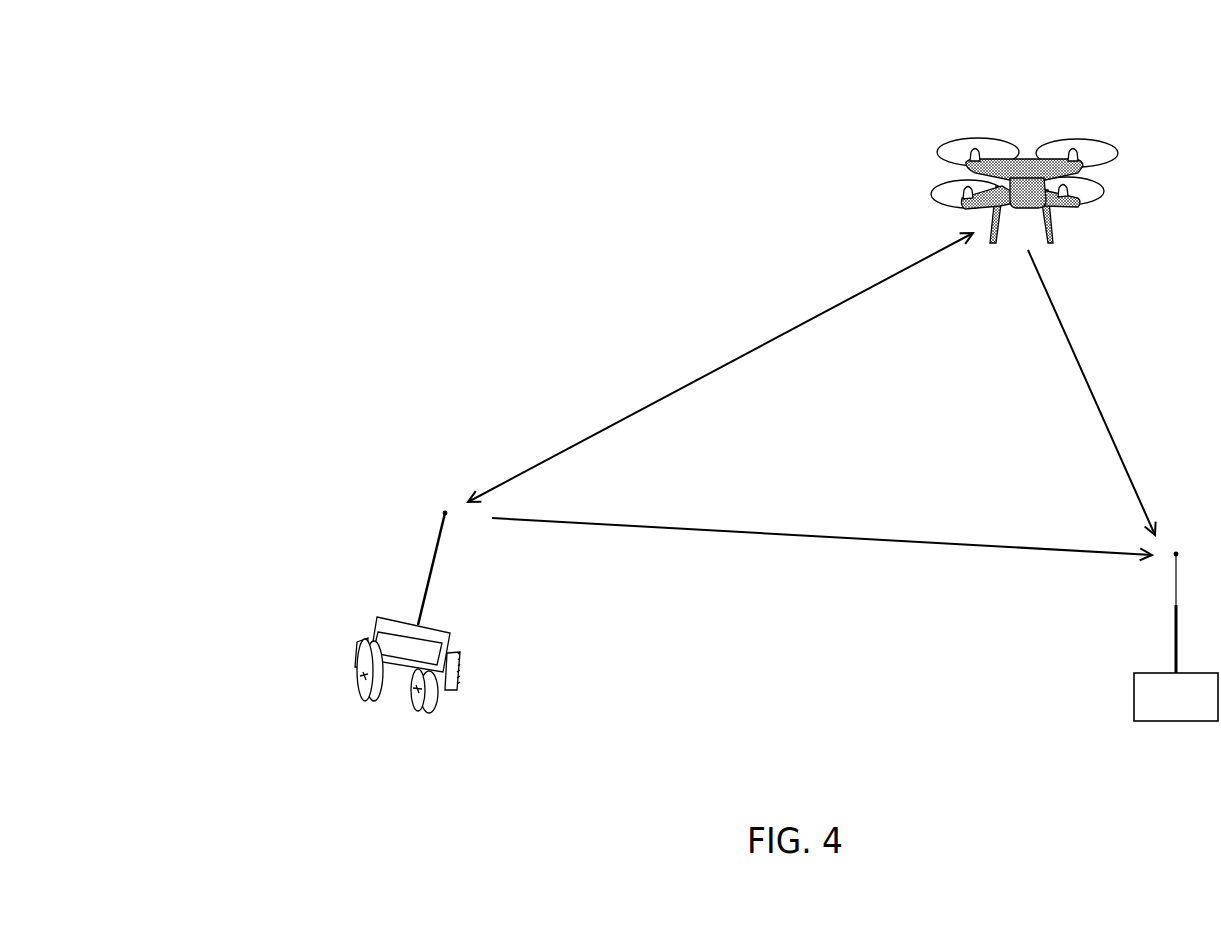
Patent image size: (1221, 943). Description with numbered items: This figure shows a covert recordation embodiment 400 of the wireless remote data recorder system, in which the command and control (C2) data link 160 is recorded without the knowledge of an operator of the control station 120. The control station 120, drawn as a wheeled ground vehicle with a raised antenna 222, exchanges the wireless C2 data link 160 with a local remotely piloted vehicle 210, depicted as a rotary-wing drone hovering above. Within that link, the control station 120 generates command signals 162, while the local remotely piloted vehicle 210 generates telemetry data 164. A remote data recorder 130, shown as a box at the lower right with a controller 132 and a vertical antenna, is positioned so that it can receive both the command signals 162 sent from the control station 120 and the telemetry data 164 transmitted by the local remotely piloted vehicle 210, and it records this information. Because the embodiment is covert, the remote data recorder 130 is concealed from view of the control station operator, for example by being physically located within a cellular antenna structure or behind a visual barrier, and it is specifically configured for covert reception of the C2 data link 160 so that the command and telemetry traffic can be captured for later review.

The covert recordation 400 is at (226, 116).
The local remotely piloted vehicle 210 is at (1110, 146).
The command and control data link 160 is at (797, 326).
The command signals 162 is at (887, 540).
The telemetry data 164 is at (1070, 345).
The control station 120 is at (358, 657).
The antenna of ground robot 222 is at (428, 575).
The remote data recorder 130 is at (1133, 700).
The controller 132 is at (1175, 632).